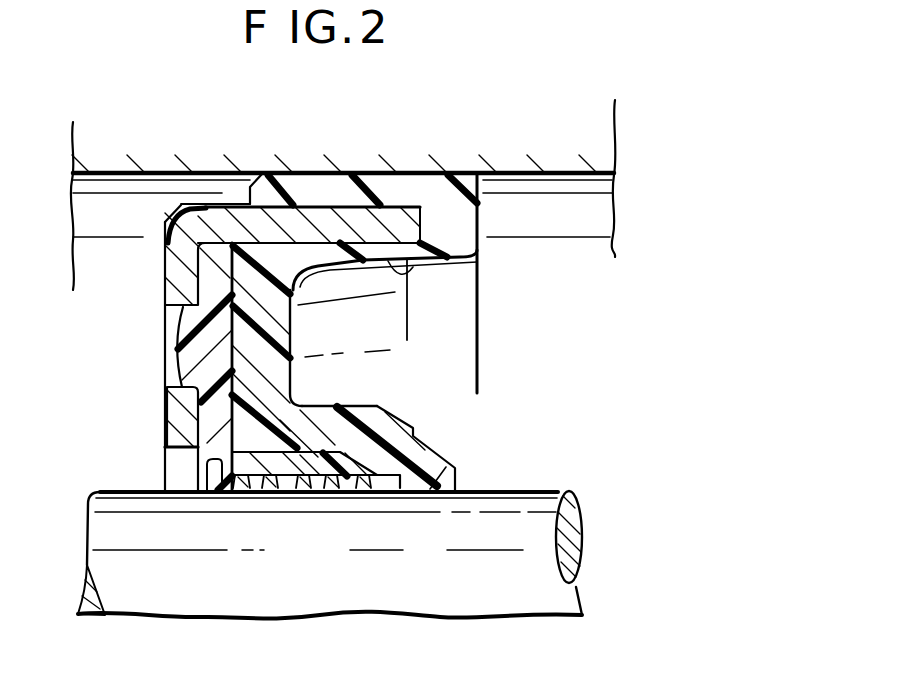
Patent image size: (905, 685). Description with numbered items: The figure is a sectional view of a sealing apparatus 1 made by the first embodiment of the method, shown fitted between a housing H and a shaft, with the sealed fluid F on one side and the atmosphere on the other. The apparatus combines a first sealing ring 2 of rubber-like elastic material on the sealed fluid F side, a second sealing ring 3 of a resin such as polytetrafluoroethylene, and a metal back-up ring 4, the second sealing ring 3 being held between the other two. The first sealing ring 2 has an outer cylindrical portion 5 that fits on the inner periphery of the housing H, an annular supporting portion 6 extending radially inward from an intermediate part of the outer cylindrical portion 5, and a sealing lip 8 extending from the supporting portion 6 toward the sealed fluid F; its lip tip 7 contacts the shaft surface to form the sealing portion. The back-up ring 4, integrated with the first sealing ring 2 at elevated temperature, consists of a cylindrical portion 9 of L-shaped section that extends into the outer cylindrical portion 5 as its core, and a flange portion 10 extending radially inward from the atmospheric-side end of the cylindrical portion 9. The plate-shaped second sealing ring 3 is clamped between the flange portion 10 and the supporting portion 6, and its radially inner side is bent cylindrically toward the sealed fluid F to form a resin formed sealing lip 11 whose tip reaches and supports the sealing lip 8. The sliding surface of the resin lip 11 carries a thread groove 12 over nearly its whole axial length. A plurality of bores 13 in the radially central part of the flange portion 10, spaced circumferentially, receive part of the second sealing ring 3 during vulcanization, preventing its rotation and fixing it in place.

The sealing apparatus 1 is at (520, 183).
The first sealing ring 2 is at (428, 172).
The second sealing ring 3 is at (204, 467).
The back-up ring 4 is at (337, 202).
The outer cylindrical portion 5 is at (410, 262).
The annular supporting portion 6 is at (290, 329).
The lip tip 7 is at (448, 467).
The sealing lip 8 is at (413, 415).
The cylindrical portion 9 is at (263, 218).
The flange portion 10 is at (168, 414).
The resin formed sealing lip 11 is at (310, 466).
The thread groove 12 is at (333, 491).
The bores 13 is at (180, 386).
The housing H is at (137, 178).
The sealed fluid F is at (626, 308).